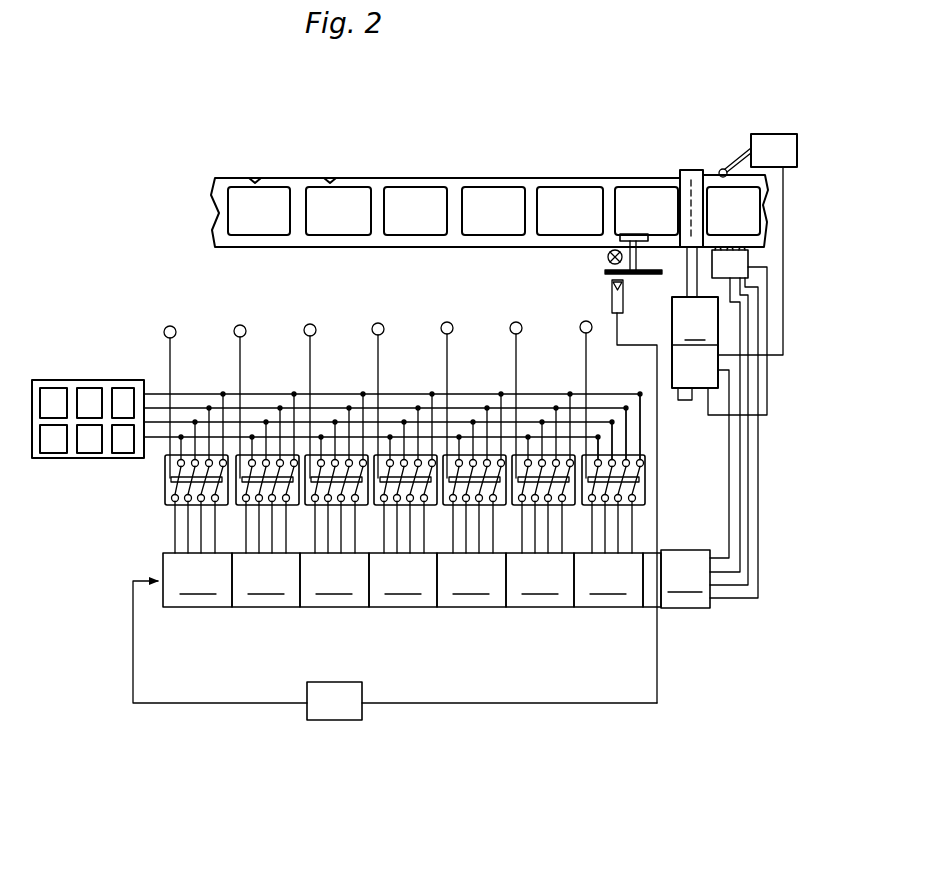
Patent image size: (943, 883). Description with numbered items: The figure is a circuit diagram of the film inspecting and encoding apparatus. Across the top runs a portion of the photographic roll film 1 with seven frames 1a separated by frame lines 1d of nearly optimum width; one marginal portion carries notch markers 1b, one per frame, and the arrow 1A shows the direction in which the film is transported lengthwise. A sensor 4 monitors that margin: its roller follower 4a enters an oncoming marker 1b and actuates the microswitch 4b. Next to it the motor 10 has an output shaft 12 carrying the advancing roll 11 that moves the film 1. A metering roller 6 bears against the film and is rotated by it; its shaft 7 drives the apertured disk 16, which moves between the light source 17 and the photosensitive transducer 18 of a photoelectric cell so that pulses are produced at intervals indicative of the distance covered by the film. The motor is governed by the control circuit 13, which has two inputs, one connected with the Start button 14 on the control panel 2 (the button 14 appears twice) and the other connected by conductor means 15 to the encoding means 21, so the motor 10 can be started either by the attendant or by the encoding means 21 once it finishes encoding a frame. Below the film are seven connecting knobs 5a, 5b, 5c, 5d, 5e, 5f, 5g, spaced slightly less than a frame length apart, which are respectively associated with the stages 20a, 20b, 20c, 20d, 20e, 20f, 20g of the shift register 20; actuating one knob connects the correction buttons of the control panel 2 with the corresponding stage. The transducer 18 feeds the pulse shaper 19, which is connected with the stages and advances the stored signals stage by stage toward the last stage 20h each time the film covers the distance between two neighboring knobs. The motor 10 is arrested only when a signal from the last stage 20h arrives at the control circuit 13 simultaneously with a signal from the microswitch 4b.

The photographic roll film 1 is at (302, 185).
The film frame 1a is at (270, 198).
The notch marker 1b is at (255, 177).
The frame line 1d is at (531, 190).
The film transport direction arrow 1A is at (200, 213).
The control panel 2 is at (73, 378).
The sensor 4 is at (771, 112).
The roller follower 4a is at (722, 168).
The microswitch 4b is at (762, 140).
The connecting knob 5a is at (174, 337).
The connecting knob 5b is at (244, 336).
The connecting knob 5c is at (314, 335).
The connecting knob 5d is at (382, 334).
The connecting knob 5e is at (451, 333).
The connecting knob 5f is at (520, 333).
The connecting knob 5g is at (581, 323).
The roller 6 is at (640, 233).
The shaft 7 is at (637, 258).
The motor 10 is at (695, 342).
The advancing roll 11 is at (686, 172).
The output shaft 12 is at (686, 279).
The control circuit 13 is at (673, 369).
The Start button 14 is at (684, 401).
The conductor means 15 is at (767, 403).
The disk 16 is at (605, 271).
The light source 17 is at (607, 257).
The photosensitive transducer 18 is at (612, 302).
The pulse shaper 19 is at (338, 712).
The shift register 20 is at (436, 598).
The shift register stage 20a is at (197, 580).
The shift register stage 20b is at (266, 580).
The shift register stage 20c is at (334, 580).
The shift register stage 20d is at (403, 580).
The shift register stage 20e is at (471, 580).
The shift register stage 20f is at (540, 580).
The shift register stage 20g is at (608, 580).
The last shift register stage 20h is at (685, 579).
The encoding means 21 is at (722, 270).